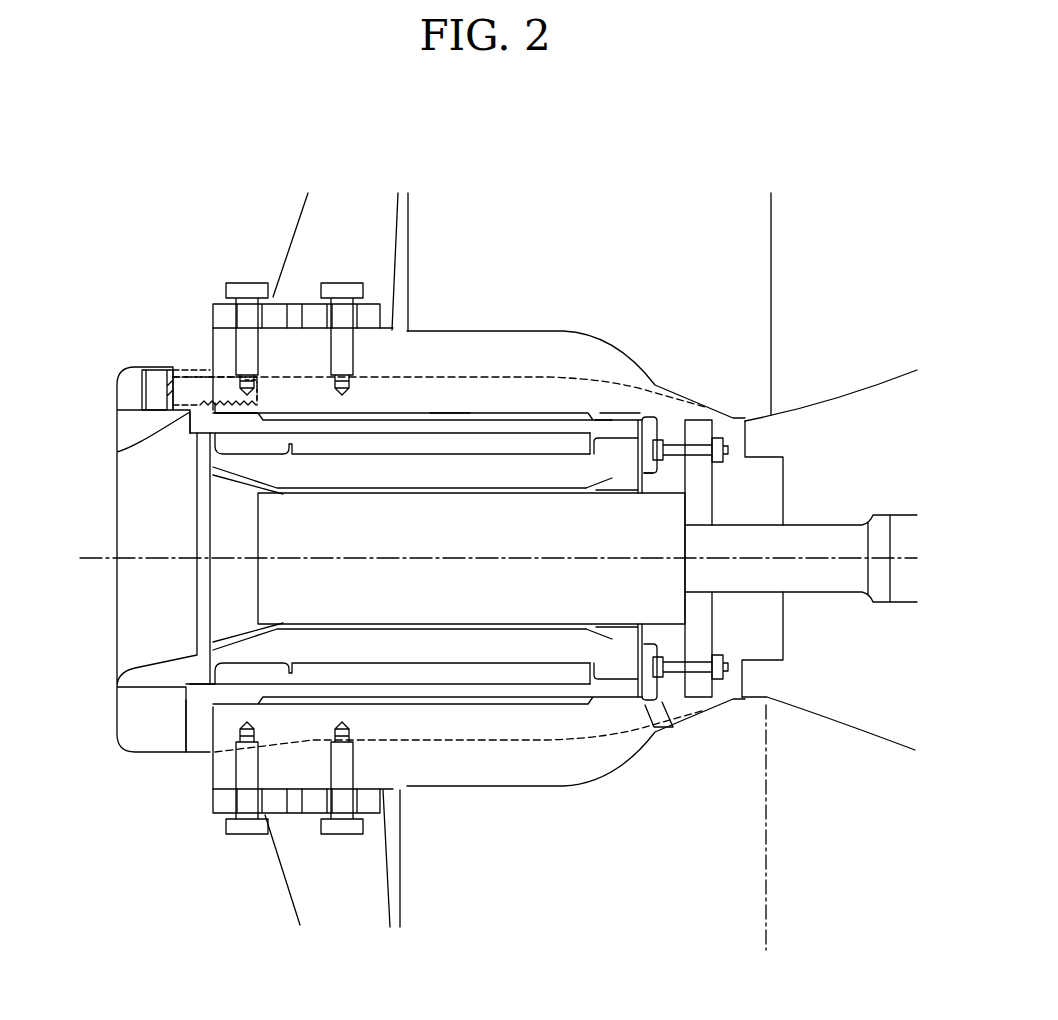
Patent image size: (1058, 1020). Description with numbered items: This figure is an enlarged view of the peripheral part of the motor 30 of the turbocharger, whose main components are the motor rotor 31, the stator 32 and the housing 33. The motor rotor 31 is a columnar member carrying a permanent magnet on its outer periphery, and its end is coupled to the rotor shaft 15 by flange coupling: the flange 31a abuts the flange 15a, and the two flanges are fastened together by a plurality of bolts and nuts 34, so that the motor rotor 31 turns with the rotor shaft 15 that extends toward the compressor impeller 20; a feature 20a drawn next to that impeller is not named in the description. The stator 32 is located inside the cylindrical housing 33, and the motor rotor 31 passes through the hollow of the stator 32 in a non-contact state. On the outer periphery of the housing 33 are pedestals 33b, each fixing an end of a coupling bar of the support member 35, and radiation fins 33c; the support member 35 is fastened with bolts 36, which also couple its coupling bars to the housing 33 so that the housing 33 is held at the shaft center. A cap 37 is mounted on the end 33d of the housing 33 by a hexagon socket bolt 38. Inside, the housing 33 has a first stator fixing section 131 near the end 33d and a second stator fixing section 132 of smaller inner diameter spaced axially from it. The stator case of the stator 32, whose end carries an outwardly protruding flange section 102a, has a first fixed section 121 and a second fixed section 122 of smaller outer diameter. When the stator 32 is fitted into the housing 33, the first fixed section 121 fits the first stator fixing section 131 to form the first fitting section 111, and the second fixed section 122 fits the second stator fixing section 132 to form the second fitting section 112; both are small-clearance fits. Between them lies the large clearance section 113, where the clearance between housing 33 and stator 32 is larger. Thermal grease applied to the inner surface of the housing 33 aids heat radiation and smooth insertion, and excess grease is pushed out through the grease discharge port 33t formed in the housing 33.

The rotor shaft 15 is at (905, 532).
The flange 15a is at (708, 420).
The compressor impeller 20 is at (860, 712).
The mounting face 20a is at (790, 248).
The motor 30 is at (120, 775).
The motor rotor 31 is at (450, 600).
The flange 31a is at (660, 417).
The stator 32 is at (492, 440).
The housing 33 is at (220, 727).
The pedestals 33b is at (213, 318).
The radiation fins 33c is at (548, 377).
The end 33d is at (190, 418).
The grease discharge port 33t is at (663, 713).
The bolts and nuts 34 is at (656, 440).
The support member 35 is at (297, 913).
The bolts 36 is at (245, 286).
The cap 37 is at (128, 722).
The hexagon socket bolt 38 is at (155, 388).
The flange section 102a is at (187, 713).
The first fitting section 111 is at (257, 413).
The second fitting section 112 is at (623, 413).
The large clearance section 113 is at (448, 413).
The first fixed section 121 is at (215, 397).
The second fixed section 122 is at (600, 418).
The first stator fixing section 131 is at (213, 415).
The second stator fixing section 132 is at (610, 423).